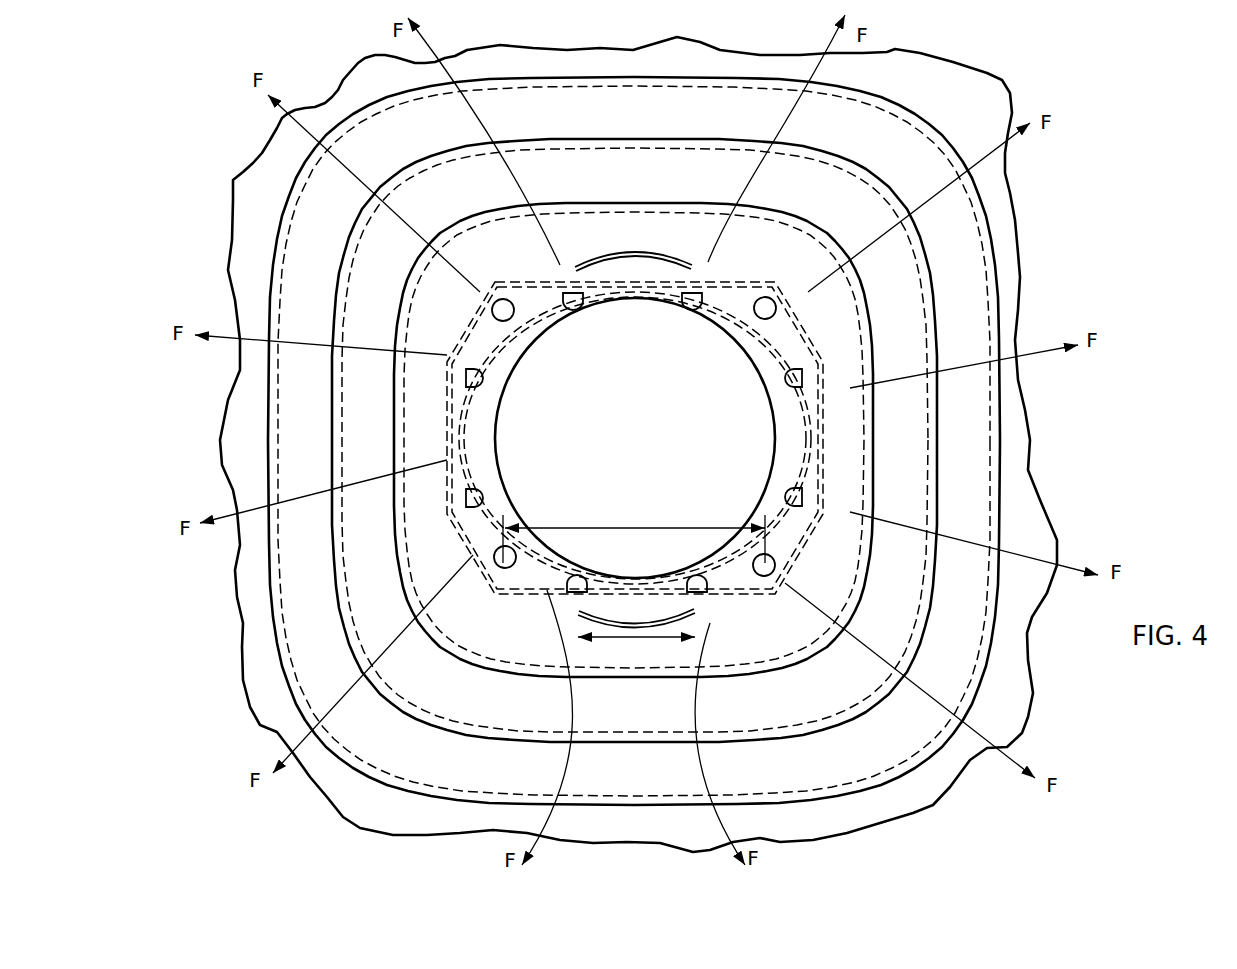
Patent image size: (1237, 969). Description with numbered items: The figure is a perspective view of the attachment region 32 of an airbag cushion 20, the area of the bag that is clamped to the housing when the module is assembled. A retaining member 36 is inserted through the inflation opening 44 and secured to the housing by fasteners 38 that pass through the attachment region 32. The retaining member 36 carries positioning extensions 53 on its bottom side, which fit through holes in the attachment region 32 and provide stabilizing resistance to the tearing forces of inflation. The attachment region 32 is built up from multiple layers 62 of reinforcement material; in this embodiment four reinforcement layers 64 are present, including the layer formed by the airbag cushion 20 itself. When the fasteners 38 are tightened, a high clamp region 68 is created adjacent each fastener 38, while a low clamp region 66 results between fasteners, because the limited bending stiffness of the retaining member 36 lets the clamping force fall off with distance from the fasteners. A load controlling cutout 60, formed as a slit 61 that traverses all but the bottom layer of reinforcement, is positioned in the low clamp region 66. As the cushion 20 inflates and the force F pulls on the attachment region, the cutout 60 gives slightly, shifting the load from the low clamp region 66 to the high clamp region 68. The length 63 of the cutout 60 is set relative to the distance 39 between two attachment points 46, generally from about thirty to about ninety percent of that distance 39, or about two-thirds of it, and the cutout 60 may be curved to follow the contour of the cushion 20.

The airbag cushion 20 is at (937, 108).
The attachment region 32 is at (1042, 80).
The retaining member 36 is at (735, 283).
The fasteners 38 is at (503, 299).
The distance between two attachment points 39 is at (638, 527).
The inflation opening 44 is at (757, 410).
The attachment points 46 is at (505, 526).
The positioning extensions 53 is at (466, 378).
The load controlling cutout 60 is at (665, 258).
The slit 61 is at (628, 256).
The reinforcement layers 62 is at (856, 601).
The length of the load controlling cutout 63 is at (597, 640).
The reinforcement layers 64 is at (848, 100).
The low clamp region 66 is at (614, 239).
The high clamp region 68 is at (426, 291).